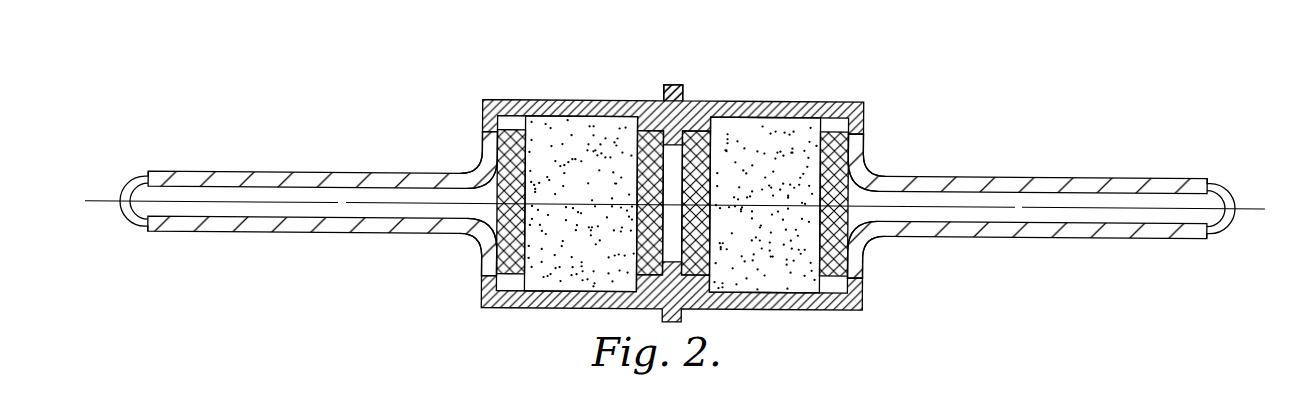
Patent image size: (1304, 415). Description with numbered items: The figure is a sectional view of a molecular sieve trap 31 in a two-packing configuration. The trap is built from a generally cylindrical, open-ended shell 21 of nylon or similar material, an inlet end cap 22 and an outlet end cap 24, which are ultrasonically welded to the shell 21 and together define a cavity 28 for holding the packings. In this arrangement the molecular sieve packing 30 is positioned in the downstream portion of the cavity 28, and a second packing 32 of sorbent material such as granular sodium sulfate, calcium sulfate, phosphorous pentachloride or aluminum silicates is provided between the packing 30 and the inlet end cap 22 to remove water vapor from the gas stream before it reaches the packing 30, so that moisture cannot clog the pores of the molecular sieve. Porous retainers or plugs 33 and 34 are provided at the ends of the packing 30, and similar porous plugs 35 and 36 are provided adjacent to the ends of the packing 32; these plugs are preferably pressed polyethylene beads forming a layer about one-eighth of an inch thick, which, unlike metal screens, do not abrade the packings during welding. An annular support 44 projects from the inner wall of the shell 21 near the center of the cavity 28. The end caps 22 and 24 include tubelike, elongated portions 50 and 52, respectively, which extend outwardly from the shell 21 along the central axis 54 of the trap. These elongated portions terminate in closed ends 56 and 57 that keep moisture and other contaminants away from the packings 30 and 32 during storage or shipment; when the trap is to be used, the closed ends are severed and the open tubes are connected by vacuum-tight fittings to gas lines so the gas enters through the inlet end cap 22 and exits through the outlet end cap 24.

The shell 21 is at (598, 101).
The inlet end cap 22 is at (483, 151).
The outlet end cap 24 is at (867, 157).
The cavity 28 is at (595, 190).
The packing 30 is at (778, 129).
The trap 31 is at (676, 75).
The second packing 32 is at (540, 129).
The porous retainer or plug 33 is at (697, 262).
The plug 34 is at (834, 262).
The porous retainer or plug 35 is at (506, 141).
The porous retainer or plug 36 is at (643, 254).
The annular support 44 is at (675, 151).
The tubelike elongated portion 50 is at (296, 175).
The tubelike elongated portion 52 is at (1073, 177).
The central axis 54 is at (275, 206).
The closed end 56 is at (135, 188).
The closed end 57 is at (1224, 190).